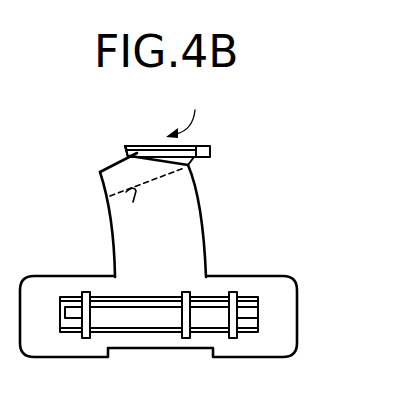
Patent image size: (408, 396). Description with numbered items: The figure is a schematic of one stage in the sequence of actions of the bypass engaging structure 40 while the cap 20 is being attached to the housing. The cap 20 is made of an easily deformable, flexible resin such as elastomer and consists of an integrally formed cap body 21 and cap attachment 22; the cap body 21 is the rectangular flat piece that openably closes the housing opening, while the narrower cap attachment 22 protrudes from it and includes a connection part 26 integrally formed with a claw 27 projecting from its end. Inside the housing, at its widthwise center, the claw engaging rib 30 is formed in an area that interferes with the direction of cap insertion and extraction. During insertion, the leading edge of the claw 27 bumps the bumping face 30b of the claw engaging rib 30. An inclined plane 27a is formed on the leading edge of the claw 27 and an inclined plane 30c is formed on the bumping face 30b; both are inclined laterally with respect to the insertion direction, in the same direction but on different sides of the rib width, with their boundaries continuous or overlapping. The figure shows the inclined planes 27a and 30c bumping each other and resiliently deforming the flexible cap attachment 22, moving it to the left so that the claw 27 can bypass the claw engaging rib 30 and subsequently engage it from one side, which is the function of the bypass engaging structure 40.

The cap 20 is at (296, 209).
The cap body 21 is at (287, 316).
The cap attachment 22 is at (194, 248).
The connection part 26 is at (138, 248).
The claw 27 is at (130, 205).
The inclined plane 27a is at (189, 164).
The claw engaging rib 30 is at (195, 147).
The bumping face 30b is at (186, 163).
The inclined plane 30c is at (125, 148).
The bypass engaging structure 40 is at (186, 114).